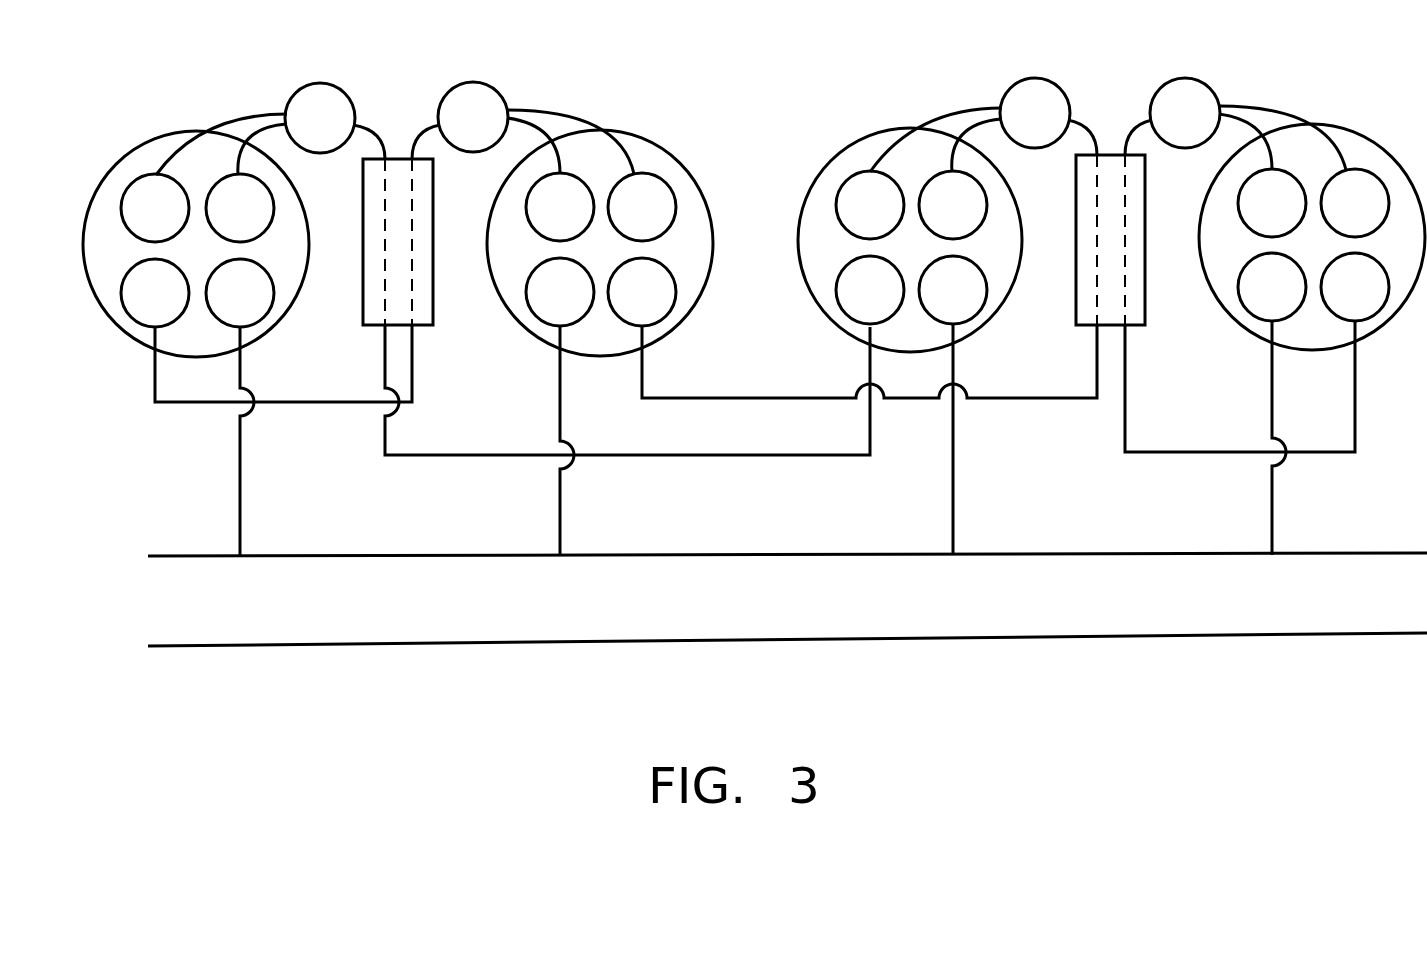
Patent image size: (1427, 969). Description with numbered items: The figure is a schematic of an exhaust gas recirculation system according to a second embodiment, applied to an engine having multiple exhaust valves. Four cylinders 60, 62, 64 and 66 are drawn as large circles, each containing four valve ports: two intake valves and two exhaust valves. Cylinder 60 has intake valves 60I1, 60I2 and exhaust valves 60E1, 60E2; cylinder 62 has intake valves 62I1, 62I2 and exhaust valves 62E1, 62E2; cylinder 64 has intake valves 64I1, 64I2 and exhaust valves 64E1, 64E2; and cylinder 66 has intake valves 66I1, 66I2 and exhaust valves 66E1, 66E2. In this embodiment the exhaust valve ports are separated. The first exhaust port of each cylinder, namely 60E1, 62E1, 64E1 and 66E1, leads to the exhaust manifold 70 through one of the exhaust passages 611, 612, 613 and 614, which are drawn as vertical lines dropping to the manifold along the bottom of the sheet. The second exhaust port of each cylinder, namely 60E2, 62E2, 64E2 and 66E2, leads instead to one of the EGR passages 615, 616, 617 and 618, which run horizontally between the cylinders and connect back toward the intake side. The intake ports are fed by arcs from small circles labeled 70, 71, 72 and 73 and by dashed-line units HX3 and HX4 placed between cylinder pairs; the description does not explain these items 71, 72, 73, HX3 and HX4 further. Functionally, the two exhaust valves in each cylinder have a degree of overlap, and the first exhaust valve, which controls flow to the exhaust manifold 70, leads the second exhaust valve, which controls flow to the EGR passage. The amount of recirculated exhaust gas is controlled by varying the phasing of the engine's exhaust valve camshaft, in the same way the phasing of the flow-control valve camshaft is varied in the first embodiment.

The cylinder 60 is at (196, 212).
The cylinder 62 is at (600, 212).
The cylinder 64 is at (910, 207).
The cylinder 66 is at (1312, 208).
The exhaust manifold 70 is at (300, 88).
The compressor 71 is at (502, 90).
The compressor 72 is at (1012, 85).
The compressor 73 is at (1214, 87).
The heat exchanger HX3 is at (402, 136).
The heat exchanger HX4 is at (1113, 130).
The exhaust passage 611 is at (240, 500).
The exhaust passage 612 is at (560, 500).
The exhaust passage 613 is at (950, 483).
The exhaust passage 614 is at (1270, 483).
The EGR passage 615 is at (153, 395).
The EGR passage 616 is at (812, 395).
The EGR passage 617 is at (742, 452).
The EGR passage 618 is at (1318, 450).
The intake valve I1 60I1 is at (134, 226).
The intake valve I2 60I2 is at (219, 226).
The exhaust valve E1 60E1 is at (216, 311).
The exhaust valve E2 60E2 is at (131, 311).
The intake valve I1 62I1 is at (539, 225).
The intake valve I2 62I2 is at (621, 225).
The exhaust valve E1 62E1 is at (536, 310).
The exhaust valve E2 62E2 is at (618, 310).
The intake valve I1 64I1 is at (849, 223).
The intake valve I2 64I2 is at (932, 223).
The exhaust valve E1 64E1 is at (929, 308).
The exhaust valve E2 64E2 is at (846, 308).
The intake valve I1 66I1 is at (1251, 221).
The intake valve I2 66I2 is at (1334, 221).
The exhaust valve E1 66E1 is at (1248, 305).
The exhaust valve E2 66E2 is at (1331, 305).